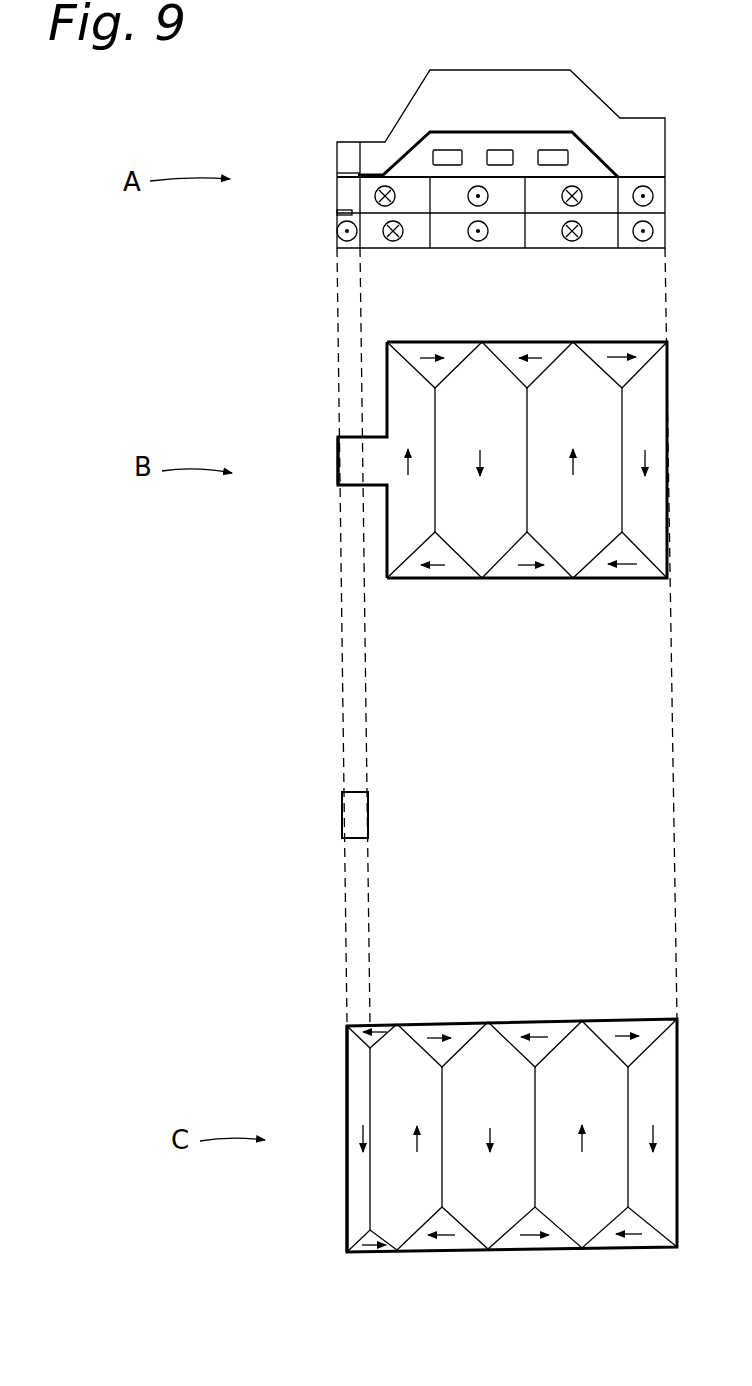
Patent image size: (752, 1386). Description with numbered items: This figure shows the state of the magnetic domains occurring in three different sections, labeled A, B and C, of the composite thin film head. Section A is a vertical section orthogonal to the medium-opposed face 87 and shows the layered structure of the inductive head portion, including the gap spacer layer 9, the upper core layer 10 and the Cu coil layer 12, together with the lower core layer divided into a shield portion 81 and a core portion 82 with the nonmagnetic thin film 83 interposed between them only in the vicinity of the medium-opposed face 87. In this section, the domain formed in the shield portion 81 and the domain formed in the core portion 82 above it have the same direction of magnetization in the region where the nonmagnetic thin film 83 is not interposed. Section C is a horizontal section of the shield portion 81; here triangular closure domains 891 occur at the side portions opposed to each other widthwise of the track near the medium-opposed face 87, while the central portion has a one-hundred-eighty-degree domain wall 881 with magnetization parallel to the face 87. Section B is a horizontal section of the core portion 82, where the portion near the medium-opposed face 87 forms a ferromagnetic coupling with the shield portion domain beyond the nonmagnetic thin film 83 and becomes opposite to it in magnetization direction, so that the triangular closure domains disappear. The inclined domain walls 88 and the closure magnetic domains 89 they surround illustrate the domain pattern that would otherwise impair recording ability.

The gap spacer layer 9 is at (338, 173).
The upper core layer 10 is at (345, 152).
The coil layer 12 is at (497, 155).
The shield portion 81 is at (335, 233).
The core portion 82 is at (336, 199).
The nonmagnetic thin film 83 is at (350, 212).
The medium-opposed face 87 is at (336, 223).
The domain wall 88 is at (463, 563).
The closure magnetic domain 89 is at (513, 570).
The 180° domain wall 881 is at (370, 1072).
The triangular closure domain 891 is at (362, 1031).